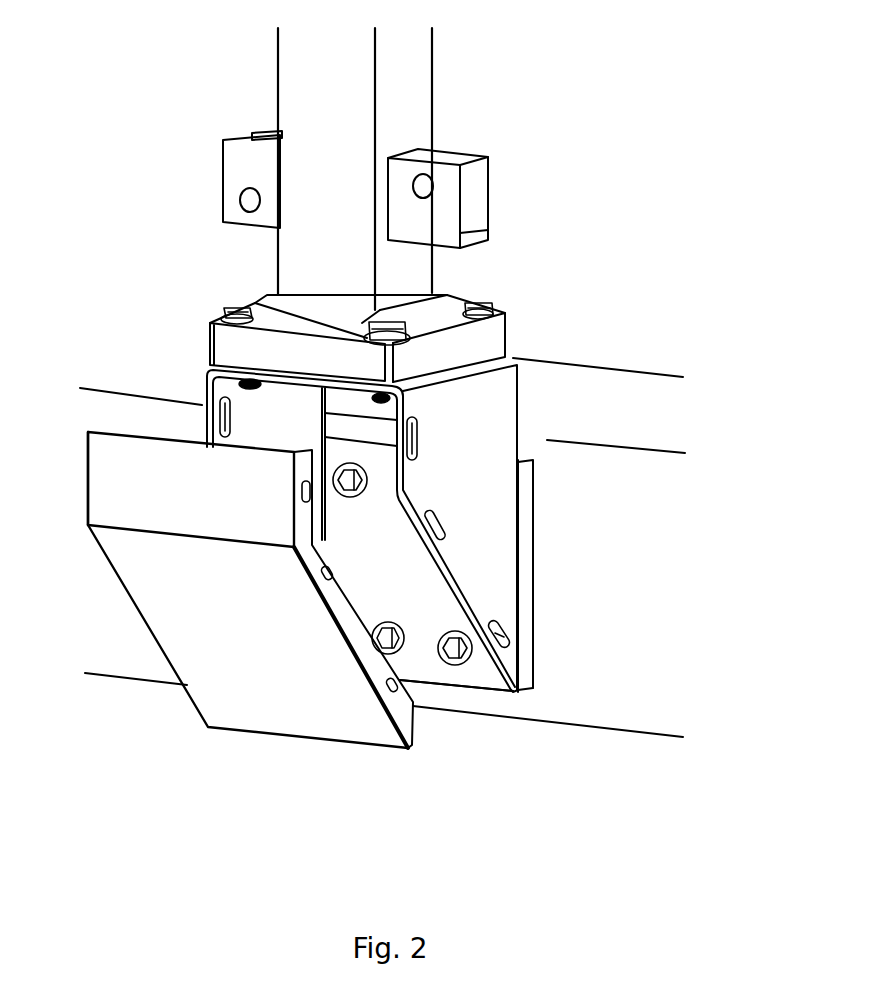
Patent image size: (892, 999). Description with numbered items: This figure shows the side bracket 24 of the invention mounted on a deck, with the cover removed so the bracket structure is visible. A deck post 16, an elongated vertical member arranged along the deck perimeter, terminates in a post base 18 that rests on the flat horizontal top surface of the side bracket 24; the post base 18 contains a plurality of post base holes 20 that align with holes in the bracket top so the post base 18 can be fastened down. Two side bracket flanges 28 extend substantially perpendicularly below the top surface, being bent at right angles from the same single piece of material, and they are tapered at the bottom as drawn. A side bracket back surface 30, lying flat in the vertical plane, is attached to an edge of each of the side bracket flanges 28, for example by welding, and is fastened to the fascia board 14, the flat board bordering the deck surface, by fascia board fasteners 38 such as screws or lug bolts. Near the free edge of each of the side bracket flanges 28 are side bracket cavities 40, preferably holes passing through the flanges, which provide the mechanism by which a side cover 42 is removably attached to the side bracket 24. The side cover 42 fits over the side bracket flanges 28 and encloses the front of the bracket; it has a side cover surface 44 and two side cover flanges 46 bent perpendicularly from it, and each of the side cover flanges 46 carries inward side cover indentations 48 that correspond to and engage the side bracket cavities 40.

The fascia board 14 is at (628, 697).
The deck post 16 is at (417, 80).
The post base 18 is at (493, 340).
The post base holes 20 is at (500, 313).
The side bracket 24 is at (540, 568).
The side bracket flanges 28 is at (493, 522).
The side bracket back surface 30 is at (437, 672).
The fascia board fasteners 38 is at (445, 648).
The side bracket cavities 40 is at (210, 418).
The side cover 42 is at (325, 755).
The side cover surface 44 is at (257, 693).
The side cover flanges 46 is at (100, 430).
The side cover indentations 48 is at (312, 495).